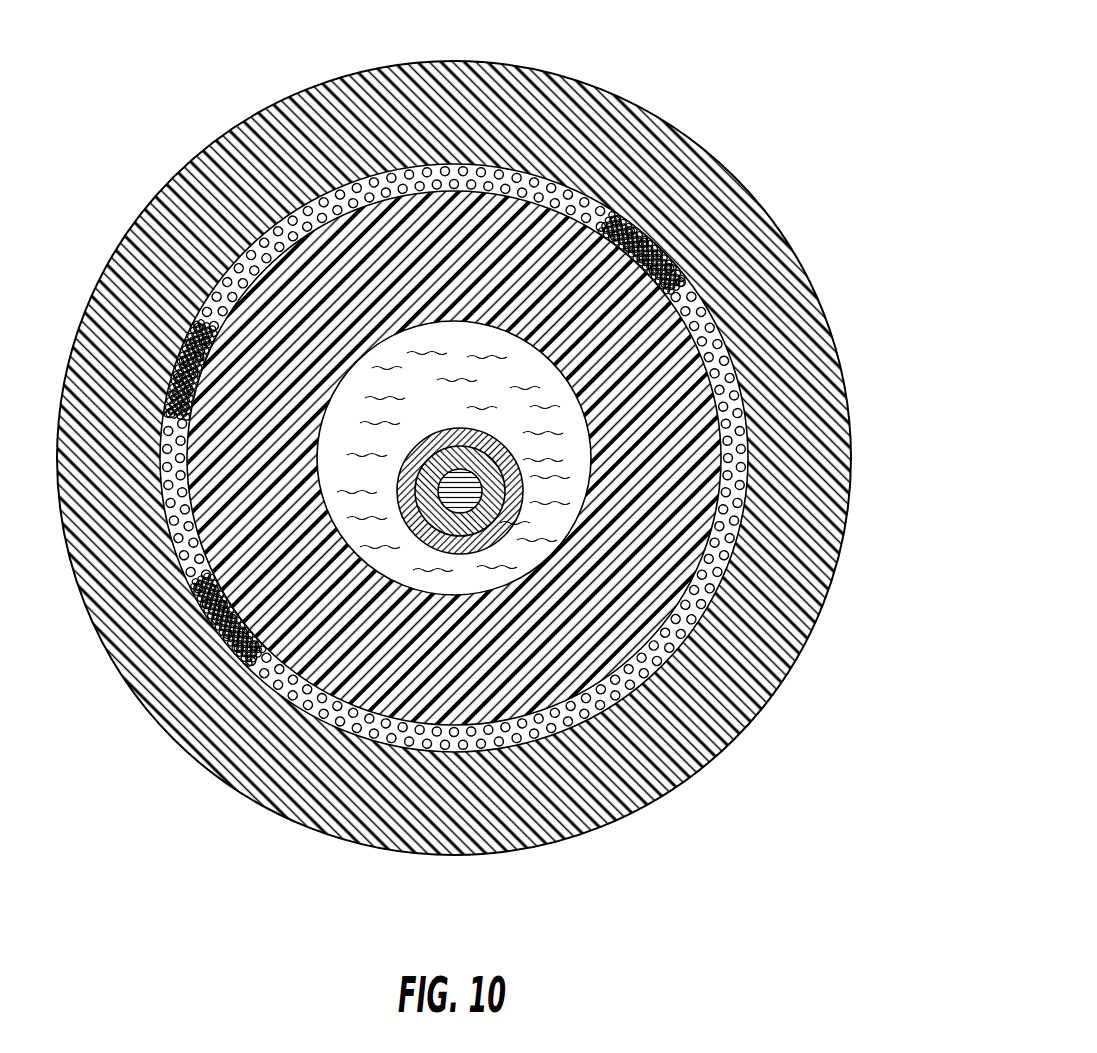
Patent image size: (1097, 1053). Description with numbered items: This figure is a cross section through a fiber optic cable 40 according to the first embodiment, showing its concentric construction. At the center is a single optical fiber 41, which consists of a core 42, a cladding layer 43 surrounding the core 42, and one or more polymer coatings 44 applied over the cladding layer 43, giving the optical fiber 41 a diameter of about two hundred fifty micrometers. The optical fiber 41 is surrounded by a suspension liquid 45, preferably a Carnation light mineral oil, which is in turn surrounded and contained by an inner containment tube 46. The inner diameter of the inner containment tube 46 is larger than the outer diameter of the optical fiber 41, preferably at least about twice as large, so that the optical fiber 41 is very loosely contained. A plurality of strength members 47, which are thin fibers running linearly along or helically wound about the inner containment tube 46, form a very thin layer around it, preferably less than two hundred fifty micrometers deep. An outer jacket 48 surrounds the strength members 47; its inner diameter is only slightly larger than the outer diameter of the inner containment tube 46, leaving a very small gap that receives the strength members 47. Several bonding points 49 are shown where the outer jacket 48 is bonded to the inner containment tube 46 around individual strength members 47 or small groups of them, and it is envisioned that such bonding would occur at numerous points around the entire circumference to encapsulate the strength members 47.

The fiber optic cable 40 is at (836, 70).
The optical fiber 41 is at (528, 430).
The core 42 is at (514, 460).
The cladding layer 43 is at (503, 490).
The polymer coatings 44 is at (481, 482).
The suspension liquid 45 is at (417, 389).
The inner containment tube 46 is at (300, 334).
The strength members 47 is at (519, 168).
The outer jacket 48 is at (790, 347).
The bonding points 49 is at (662, 244).